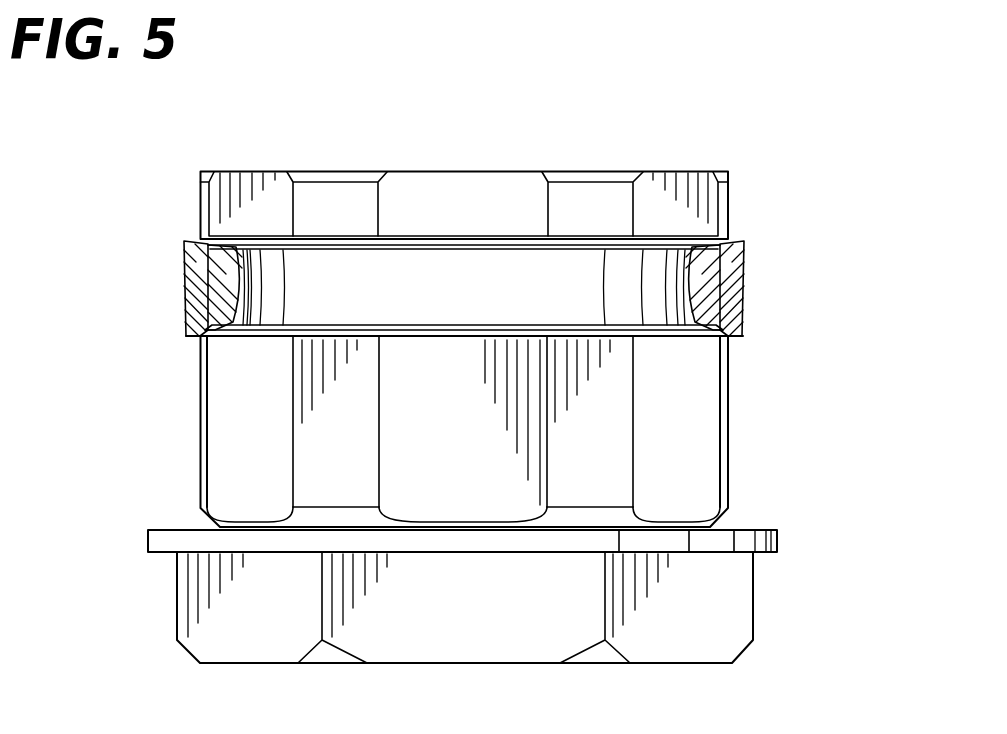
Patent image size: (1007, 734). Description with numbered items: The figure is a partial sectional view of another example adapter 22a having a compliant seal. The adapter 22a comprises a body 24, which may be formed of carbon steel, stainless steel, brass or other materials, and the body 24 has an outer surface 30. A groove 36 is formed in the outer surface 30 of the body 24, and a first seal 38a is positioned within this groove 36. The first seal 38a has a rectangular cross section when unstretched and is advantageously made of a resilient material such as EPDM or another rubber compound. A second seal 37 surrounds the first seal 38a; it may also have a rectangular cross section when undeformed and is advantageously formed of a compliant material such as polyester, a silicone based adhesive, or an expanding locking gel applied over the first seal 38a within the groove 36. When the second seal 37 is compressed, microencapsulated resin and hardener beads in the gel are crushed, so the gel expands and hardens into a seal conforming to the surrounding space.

The adapter 22a is at (637, 144).
The body 24 is at (729, 472).
The outer surface 30 is at (729, 403).
The groove 36 is at (663, 310).
The second seal 37 is at (747, 270).
The first seal 38a is at (693, 255).